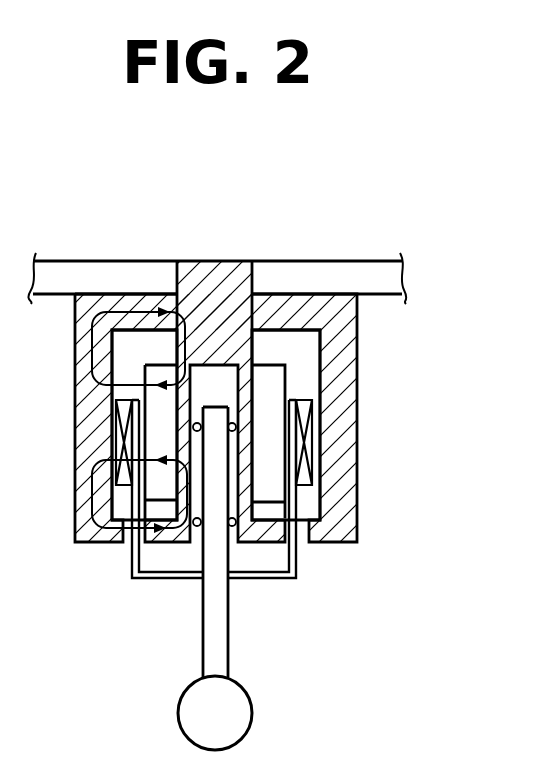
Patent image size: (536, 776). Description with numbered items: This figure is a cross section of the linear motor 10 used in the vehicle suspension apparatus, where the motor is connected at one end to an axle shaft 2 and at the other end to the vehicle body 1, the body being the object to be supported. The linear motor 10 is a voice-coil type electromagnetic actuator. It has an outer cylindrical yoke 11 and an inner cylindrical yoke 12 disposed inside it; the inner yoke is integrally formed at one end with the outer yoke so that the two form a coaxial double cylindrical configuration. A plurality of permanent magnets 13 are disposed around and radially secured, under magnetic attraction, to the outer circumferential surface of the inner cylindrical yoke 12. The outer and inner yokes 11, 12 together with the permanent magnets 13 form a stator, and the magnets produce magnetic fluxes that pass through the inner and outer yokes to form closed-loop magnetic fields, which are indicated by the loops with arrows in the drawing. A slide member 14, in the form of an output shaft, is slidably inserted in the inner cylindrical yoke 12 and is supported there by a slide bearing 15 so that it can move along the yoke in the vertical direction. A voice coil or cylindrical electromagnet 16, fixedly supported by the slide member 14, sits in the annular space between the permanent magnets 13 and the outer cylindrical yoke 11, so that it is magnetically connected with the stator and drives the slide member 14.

The vehicle body 1 is at (316, 272).
The axle shaft 2 is at (251, 718).
The linear motor 10 is at (291, 451).
The outer cylindrical yoke 11 is at (348, 378).
The inner cylindrical yoke 12 is at (243, 358).
The permanent magnets 13 is at (272, 396).
The slide member 14 is at (220, 648).
The slide bearing 15 is at (236, 530).
The voice coil 16 is at (318, 503).